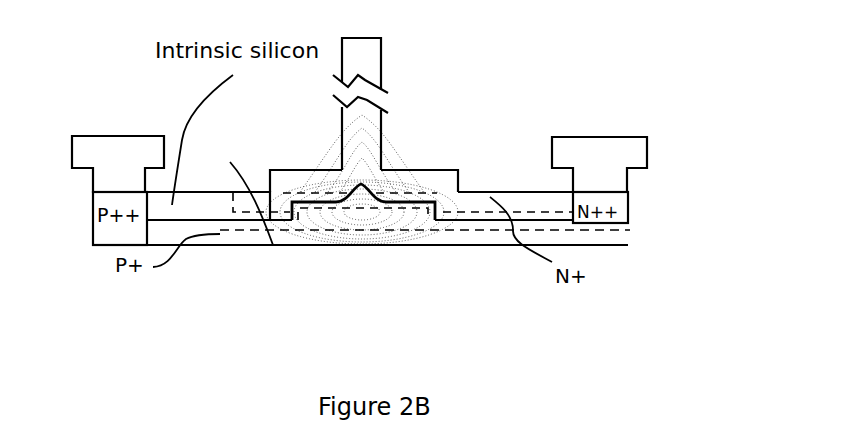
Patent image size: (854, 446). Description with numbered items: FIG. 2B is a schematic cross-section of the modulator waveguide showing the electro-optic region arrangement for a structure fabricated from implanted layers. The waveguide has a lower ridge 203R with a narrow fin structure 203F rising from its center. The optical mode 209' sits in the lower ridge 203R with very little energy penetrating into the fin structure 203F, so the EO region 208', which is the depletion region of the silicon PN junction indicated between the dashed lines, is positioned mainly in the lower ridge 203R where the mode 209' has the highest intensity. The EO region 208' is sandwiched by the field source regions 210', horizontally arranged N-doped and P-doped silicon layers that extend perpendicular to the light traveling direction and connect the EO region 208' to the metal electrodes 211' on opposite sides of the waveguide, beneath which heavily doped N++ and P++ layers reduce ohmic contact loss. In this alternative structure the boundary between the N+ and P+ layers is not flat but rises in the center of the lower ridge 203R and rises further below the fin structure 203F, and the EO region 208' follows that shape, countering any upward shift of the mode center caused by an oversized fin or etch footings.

The fin structure 203F is at (368, 63).
The lower ridge 203R is at (445, 165).
The EO region 208' is at (403, 151).
The optical mode 209' is at (347, 148).
The field source regions 210' is at (385, 186).
The metal electrodes 211' is at (378, 138).